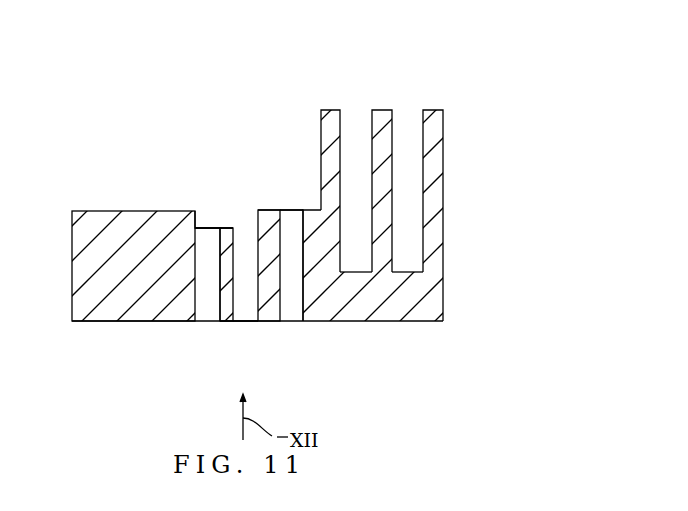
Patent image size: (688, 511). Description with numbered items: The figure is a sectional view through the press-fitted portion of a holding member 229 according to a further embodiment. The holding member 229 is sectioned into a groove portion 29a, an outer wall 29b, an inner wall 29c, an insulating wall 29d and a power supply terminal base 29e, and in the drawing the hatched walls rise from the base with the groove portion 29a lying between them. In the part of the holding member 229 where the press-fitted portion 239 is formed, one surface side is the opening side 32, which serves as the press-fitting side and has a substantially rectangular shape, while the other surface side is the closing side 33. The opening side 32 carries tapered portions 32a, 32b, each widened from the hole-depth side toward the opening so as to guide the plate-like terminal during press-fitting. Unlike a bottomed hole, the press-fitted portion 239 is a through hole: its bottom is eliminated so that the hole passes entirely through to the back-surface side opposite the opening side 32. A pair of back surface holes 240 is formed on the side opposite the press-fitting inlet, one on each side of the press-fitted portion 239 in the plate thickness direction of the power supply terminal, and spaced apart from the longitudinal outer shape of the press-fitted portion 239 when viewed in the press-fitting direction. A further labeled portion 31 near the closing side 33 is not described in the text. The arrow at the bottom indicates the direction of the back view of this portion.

The groove portion 29a is at (351, 145).
The outer wall 29b is at (323, 127).
The inner wall 29c is at (437, 125).
The insulating wall 29d is at (376, 135).
The power supply terminal base 29e is at (125, 227).
The opening side 32 is at (283, 140).
The tapered portion 32a is at (233, 228).
The tapered portion 32b is at (256, 232).
The holding member 229 is at (189, 197).
The press-fitted portion 239 is at (247, 322).
The back surface holes 240 is at (207, 322).
The corner portion 31 is at (240, 322).
The closing side 33 is at (167, 322).